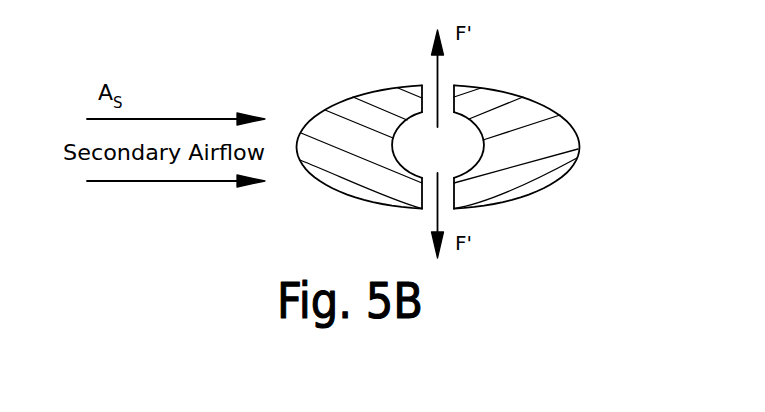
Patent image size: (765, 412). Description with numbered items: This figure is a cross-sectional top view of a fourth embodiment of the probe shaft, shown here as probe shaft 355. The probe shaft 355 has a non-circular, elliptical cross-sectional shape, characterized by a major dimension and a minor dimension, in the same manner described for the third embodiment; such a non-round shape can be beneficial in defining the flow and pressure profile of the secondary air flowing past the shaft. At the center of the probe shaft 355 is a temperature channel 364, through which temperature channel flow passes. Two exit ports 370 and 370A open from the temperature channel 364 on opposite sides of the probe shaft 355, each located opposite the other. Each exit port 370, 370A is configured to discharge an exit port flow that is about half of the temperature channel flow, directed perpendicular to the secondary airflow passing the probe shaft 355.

The probe shaft 355 is at (565, 119).
The temperature channel 364 is at (462, 162).
The exit port 370 is at (426, 83).
The exit port 370A is at (423, 203).